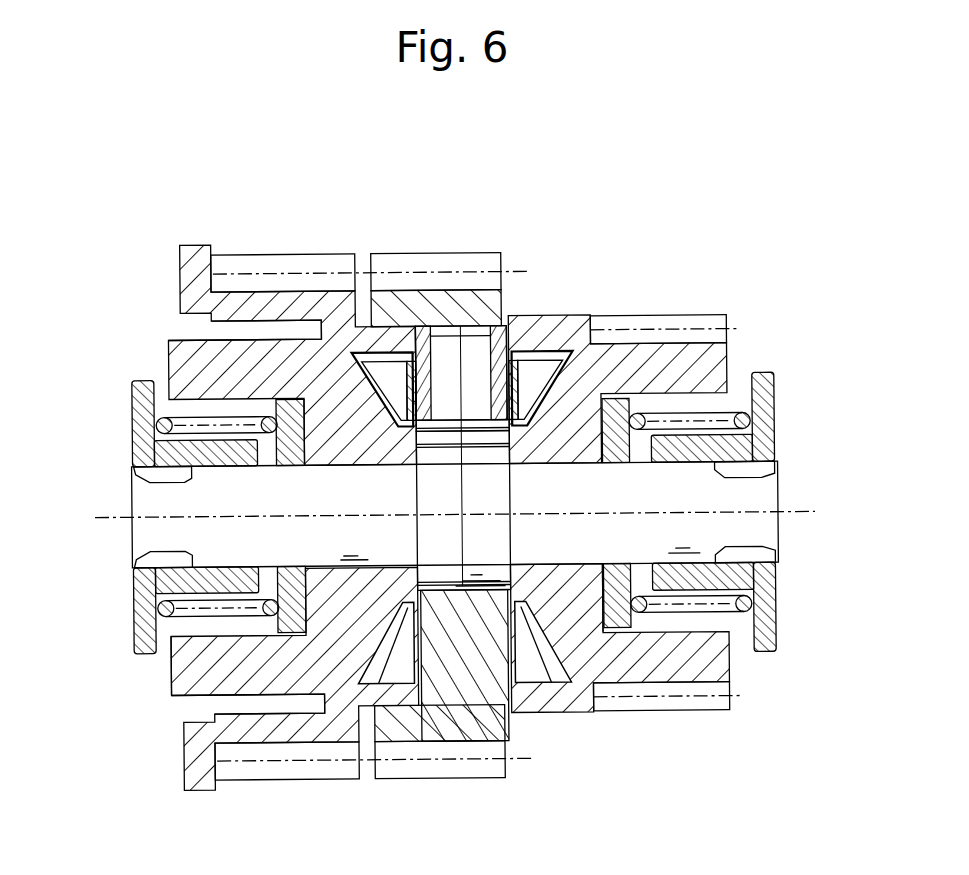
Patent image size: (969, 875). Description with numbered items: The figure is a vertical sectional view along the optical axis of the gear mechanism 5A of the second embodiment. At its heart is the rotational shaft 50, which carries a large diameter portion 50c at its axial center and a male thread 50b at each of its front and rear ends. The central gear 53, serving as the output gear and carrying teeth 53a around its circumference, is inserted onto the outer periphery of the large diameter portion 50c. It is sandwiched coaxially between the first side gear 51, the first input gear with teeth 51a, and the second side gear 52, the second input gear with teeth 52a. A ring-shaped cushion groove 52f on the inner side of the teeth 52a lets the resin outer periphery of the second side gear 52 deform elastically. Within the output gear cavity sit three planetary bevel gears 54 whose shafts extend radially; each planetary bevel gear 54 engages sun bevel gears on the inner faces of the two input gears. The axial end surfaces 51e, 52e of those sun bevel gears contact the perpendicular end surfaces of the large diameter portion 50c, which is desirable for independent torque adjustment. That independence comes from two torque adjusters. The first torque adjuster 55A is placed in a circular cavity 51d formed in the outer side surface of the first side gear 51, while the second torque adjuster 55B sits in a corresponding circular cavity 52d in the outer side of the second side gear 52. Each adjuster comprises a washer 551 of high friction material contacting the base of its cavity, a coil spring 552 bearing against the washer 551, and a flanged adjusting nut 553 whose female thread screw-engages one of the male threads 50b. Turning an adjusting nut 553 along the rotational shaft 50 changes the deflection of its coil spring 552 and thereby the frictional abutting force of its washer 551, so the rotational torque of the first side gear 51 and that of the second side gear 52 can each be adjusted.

The gear mechanism 5A is at (439, 496).
The rotational shaft 50 is at (776, 494).
The male thread 50b is at (150, 482).
The large diameter portion 50c is at (493, 547).
The first side gear 51 is at (573, 313).
The teeth 51a is at (658, 322).
The cavity 51d is at (717, 623).
The end surface 51e is at (508, 593).
The second side gear 52 is at (215, 245).
The teeth 52a is at (313, 270).
The cavity 52d is at (178, 633).
The end surface 52e is at (423, 592).
The cushion groove 52f is at (213, 319).
The central gear 53 is at (402, 255).
The teeth 53a is at (458, 267).
The planetary bevel gear 54 is at (511, 380).
The first torque adjuster 55A is at (776, 396).
The second torque adjuster 55B is at (132, 633).
The washer 551 is at (276, 405).
The coil spring 552 is at (134, 409).
The adjusting nut 553 is at (772, 441).